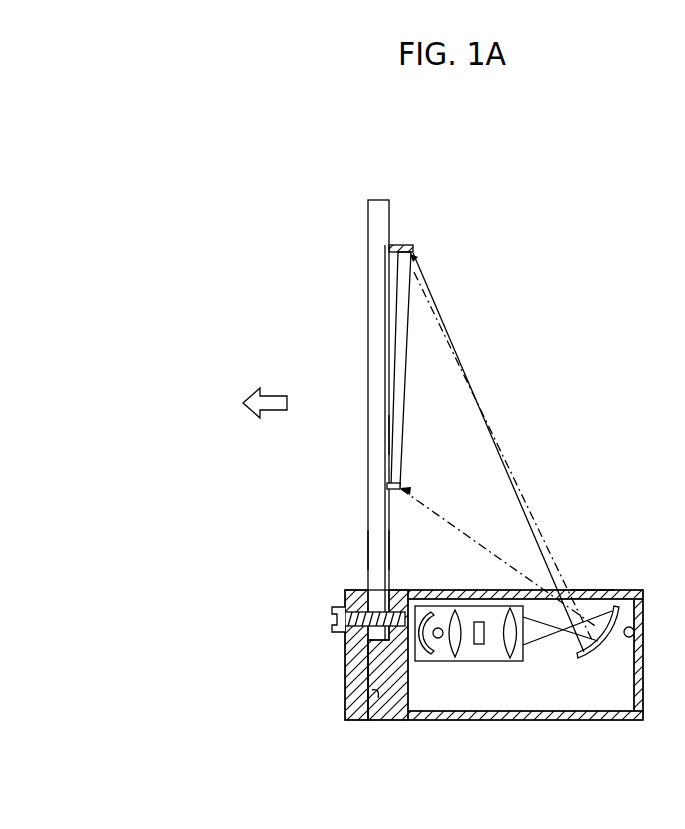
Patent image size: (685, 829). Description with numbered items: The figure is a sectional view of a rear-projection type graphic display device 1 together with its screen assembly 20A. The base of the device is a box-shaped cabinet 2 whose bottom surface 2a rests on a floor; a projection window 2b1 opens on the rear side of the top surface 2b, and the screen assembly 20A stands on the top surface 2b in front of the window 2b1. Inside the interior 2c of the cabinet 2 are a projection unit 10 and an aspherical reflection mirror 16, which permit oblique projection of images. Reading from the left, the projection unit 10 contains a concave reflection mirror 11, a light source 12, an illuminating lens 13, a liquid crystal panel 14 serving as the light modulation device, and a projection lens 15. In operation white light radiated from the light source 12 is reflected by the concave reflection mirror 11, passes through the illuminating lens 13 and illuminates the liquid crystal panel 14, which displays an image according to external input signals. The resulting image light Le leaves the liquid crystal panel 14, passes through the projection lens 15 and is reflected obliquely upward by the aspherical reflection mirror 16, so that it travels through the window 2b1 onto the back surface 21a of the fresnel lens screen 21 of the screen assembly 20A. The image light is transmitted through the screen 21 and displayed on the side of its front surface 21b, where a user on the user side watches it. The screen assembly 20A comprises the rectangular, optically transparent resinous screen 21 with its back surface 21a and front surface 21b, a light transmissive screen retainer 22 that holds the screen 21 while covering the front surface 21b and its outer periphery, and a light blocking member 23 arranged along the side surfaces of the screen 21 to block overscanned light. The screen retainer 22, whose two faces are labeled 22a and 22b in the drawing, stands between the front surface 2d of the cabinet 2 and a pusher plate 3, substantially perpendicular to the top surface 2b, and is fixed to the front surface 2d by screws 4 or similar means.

The graphic display device 1 is at (340, 206).
The cabinet 2 is at (650, 659).
The bottom surface 2a is at (607, 720).
The top surface 2b is at (634, 591).
The projection window 2b1 is at (593, 590).
The interior 2c is at (635, 632).
The front surface 2d is at (378, 695).
The pusher plate 3 is at (345, 678).
The screws 4 is at (331, 620).
The projection unit 10 is at (583, 785).
The concave reflection mirror 11 is at (426, 656).
The light source 12 is at (439, 639).
The illuminating lens 13 is at (456, 660).
The liquid crystal panel 14 is at (479, 646).
The projection lens 15 is at (510, 660).
The aspherical reflection mirror 16 is at (600, 650).
The screen assembly 20A is at (279, 268).
The fresnel lens screen 21 is at (380, 356).
The back surface 21a is at (399, 340).
The front surface 21b is at (388, 433).
The screen retainer 22 is at (362, 320).
The rear surface of transparent plate 22a is at (389, 545).
The front surface of transparent plate 22b is at (368, 546).
The light blocking member 23 is at (389, 247).
The image light Le is at (504, 456).